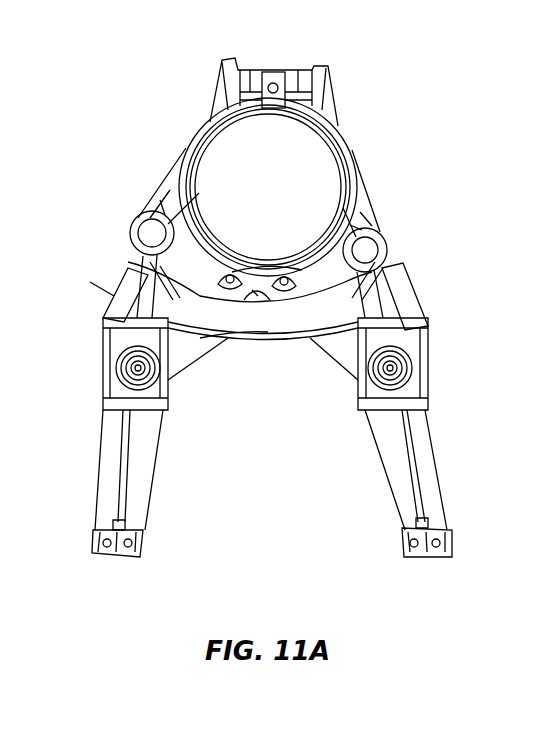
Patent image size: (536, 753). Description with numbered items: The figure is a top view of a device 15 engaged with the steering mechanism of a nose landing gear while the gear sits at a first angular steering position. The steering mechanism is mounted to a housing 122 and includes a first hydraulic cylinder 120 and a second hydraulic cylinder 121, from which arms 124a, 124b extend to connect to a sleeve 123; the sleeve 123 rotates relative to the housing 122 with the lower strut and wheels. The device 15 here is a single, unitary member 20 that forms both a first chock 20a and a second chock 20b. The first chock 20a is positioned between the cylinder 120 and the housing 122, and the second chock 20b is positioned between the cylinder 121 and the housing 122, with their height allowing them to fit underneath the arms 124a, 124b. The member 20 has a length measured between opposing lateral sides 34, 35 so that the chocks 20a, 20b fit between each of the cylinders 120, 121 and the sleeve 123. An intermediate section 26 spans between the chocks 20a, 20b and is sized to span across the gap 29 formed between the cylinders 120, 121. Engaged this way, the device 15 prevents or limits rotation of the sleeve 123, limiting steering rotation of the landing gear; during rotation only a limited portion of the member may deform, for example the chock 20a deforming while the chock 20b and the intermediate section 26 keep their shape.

The device 15 is at (265, 393).
The member 20 is at (303, 322).
The first chock 20a is at (137, 238).
The second chock 20b is at (375, 260).
The intermediate section 26 is at (262, 322).
The gap 29 is at (302, 483).
The lateral side 34 is at (113, 294).
The lateral side 35 is at (412, 278).
The first hydraulic cylinder 120 is at (112, 468).
The second hydraulic cylinder 121 is at (422, 470).
The housing 122 is at (188, 207).
The sleeve 123 is at (203, 140).
The arm 124a is at (147, 280).
The arm 124b is at (385, 283).